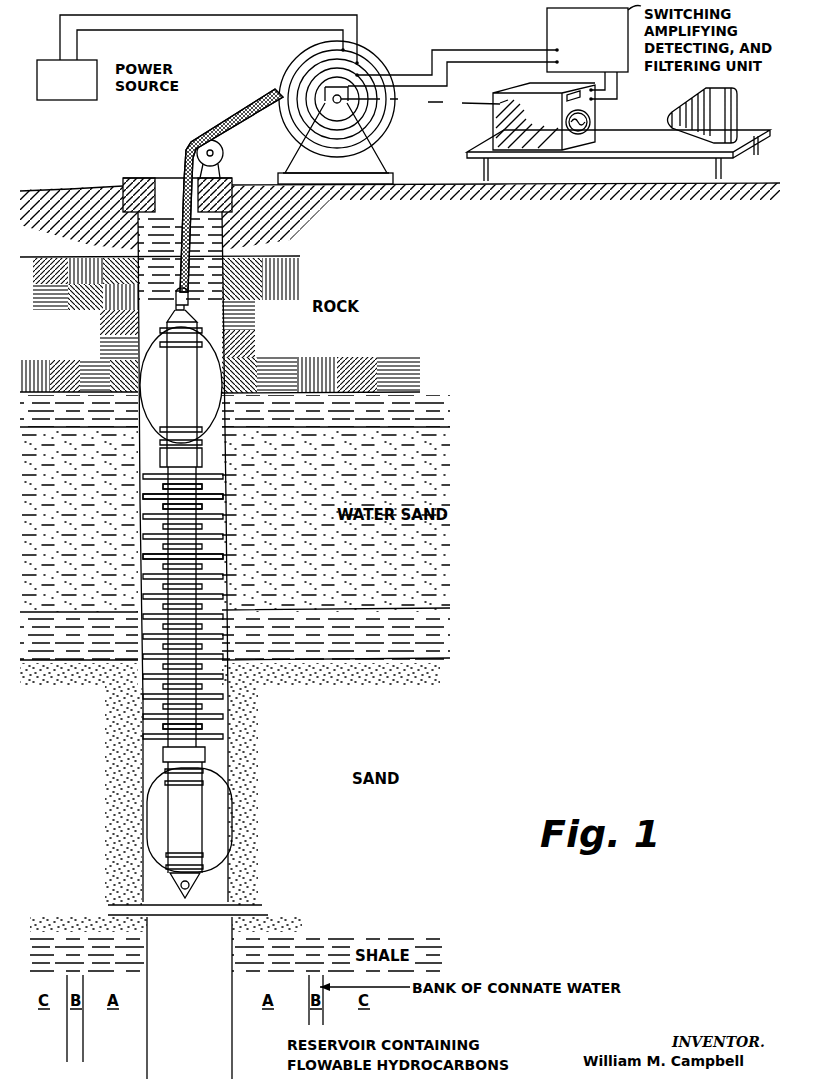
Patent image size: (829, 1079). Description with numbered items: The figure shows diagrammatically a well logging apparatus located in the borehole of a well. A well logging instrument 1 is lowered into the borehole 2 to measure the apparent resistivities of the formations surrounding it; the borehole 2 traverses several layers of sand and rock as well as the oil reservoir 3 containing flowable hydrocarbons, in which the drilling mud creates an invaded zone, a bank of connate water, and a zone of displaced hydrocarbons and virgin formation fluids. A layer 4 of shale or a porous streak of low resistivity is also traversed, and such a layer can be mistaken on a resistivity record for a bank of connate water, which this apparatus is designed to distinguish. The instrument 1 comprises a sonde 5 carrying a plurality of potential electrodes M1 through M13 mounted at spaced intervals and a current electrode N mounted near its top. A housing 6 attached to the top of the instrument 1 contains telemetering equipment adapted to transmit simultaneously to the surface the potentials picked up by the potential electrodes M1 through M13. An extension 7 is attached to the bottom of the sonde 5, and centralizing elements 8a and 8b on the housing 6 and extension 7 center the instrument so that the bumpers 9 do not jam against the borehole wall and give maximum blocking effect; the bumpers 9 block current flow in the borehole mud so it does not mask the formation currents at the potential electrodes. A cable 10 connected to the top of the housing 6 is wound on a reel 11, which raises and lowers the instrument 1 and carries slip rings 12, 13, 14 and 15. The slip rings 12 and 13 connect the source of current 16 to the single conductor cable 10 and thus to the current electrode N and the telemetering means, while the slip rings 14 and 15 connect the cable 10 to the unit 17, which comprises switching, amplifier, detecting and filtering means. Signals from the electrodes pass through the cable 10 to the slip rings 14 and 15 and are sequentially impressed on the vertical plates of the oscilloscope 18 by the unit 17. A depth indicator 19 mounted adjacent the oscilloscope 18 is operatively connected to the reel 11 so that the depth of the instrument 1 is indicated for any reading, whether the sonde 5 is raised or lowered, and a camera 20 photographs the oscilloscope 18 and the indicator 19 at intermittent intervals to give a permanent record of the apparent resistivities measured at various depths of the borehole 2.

The well logging instrument 1 is at (190, 550).
The borehole 2 is at (233, 869).
The oil reservoir 3 is at (272, 1053).
The layer 4 is at (360, 648).
The sonde 5 is at (192, 502).
The housing 6 is at (187, 360).
The extension 7 is at (192, 803).
The centralizing element 8a is at (223, 357).
The centralizing element 8b is at (232, 845).
The bumpers 9 is at (220, 682).
The cable 10 is at (187, 148).
The reel 11 is at (394, 115).
The slip ring 12 is at (318, 50).
The slip ring 13 is at (305, 72).
The slip ring 14 is at (313, 99).
The slip ring 15 is at (278, 96).
The source of current 16 is at (110, 72).
The unit 17 is at (484, 54).
The oscilloscope 18 is at (592, 121).
The depth indicator 19 is at (567, 90).
The camera 20 is at (735, 93).
The current electrode N is at (193, 487).
The potential electrode M1 is at (192, 507).
The potential electrode M13 is at (220, 731).